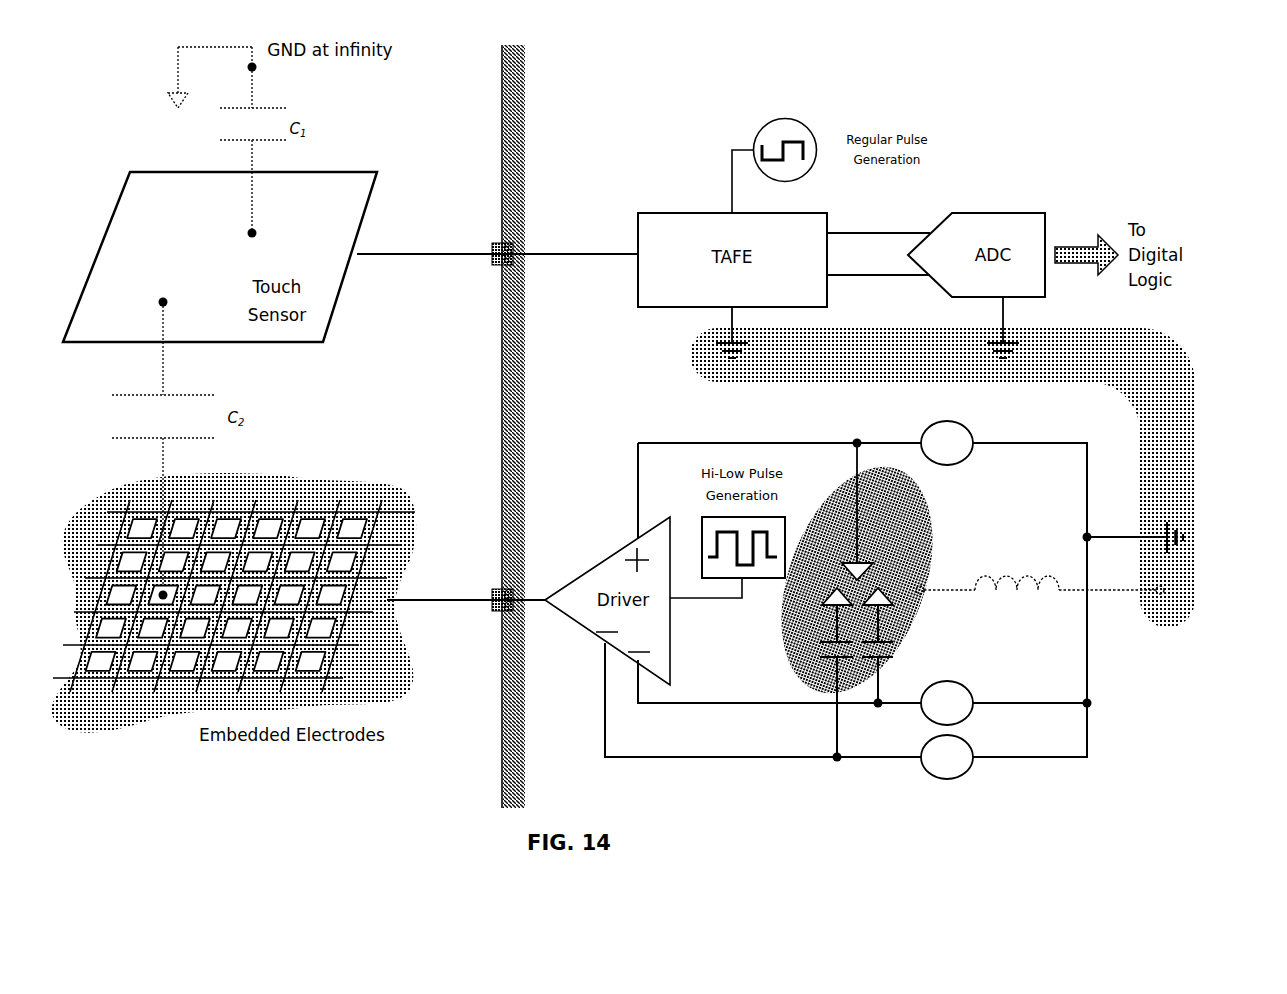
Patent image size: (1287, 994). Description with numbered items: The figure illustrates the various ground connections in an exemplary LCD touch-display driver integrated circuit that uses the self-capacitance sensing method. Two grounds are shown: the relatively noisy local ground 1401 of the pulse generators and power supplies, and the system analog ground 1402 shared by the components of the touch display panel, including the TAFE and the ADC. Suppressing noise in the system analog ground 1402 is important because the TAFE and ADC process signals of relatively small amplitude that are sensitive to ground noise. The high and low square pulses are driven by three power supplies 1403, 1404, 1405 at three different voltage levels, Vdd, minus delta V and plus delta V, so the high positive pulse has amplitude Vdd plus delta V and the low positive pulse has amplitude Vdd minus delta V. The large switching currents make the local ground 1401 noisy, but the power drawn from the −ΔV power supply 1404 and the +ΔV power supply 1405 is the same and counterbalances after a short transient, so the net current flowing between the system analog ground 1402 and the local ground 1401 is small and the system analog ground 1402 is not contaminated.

The local ground 1401 is at (948, 555).
The system analog ground 1402 is at (1196, 381).
The power supply 1403 is at (970, 432).
The −ΔV power supply 1404 is at (972, 690).
The +ΔV power supply 1405 is at (972, 776).